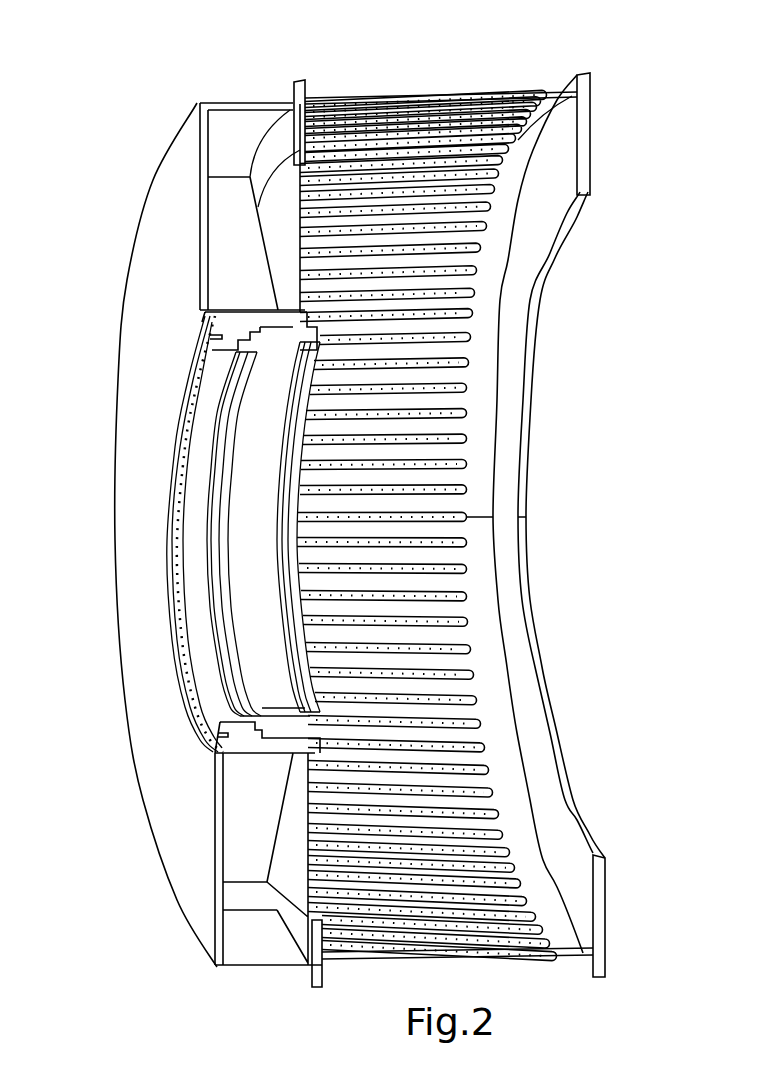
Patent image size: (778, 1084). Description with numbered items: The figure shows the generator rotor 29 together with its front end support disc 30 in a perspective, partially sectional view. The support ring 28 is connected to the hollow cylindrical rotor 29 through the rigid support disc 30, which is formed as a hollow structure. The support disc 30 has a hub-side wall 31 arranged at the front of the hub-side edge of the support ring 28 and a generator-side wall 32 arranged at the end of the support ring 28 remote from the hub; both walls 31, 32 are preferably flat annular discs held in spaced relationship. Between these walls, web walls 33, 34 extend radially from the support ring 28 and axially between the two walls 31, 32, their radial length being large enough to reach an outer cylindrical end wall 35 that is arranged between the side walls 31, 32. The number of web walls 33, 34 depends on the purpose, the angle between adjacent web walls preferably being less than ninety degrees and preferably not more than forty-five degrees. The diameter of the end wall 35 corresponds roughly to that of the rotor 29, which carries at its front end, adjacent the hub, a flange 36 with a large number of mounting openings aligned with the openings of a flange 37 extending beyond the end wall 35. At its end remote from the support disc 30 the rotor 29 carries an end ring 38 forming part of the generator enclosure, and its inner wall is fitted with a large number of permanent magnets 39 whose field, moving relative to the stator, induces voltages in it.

The support ring 28 is at (237, 323).
The rotor 29 is at (387, 97).
The support disc 30 is at (140, 113).
The hub-side wall 31 is at (195, 890).
The generator-side wall 32 is at (298, 860).
The web wall 33 is at (247, 798).
The web wall 34 is at (230, 200).
The end wall 35 is at (217, 102).
The flange 36 is at (310, 98).
The flange 37 is at (282, 97).
The end ring 38 is at (582, 147).
The permanent magnets 39 is at (565, 80).